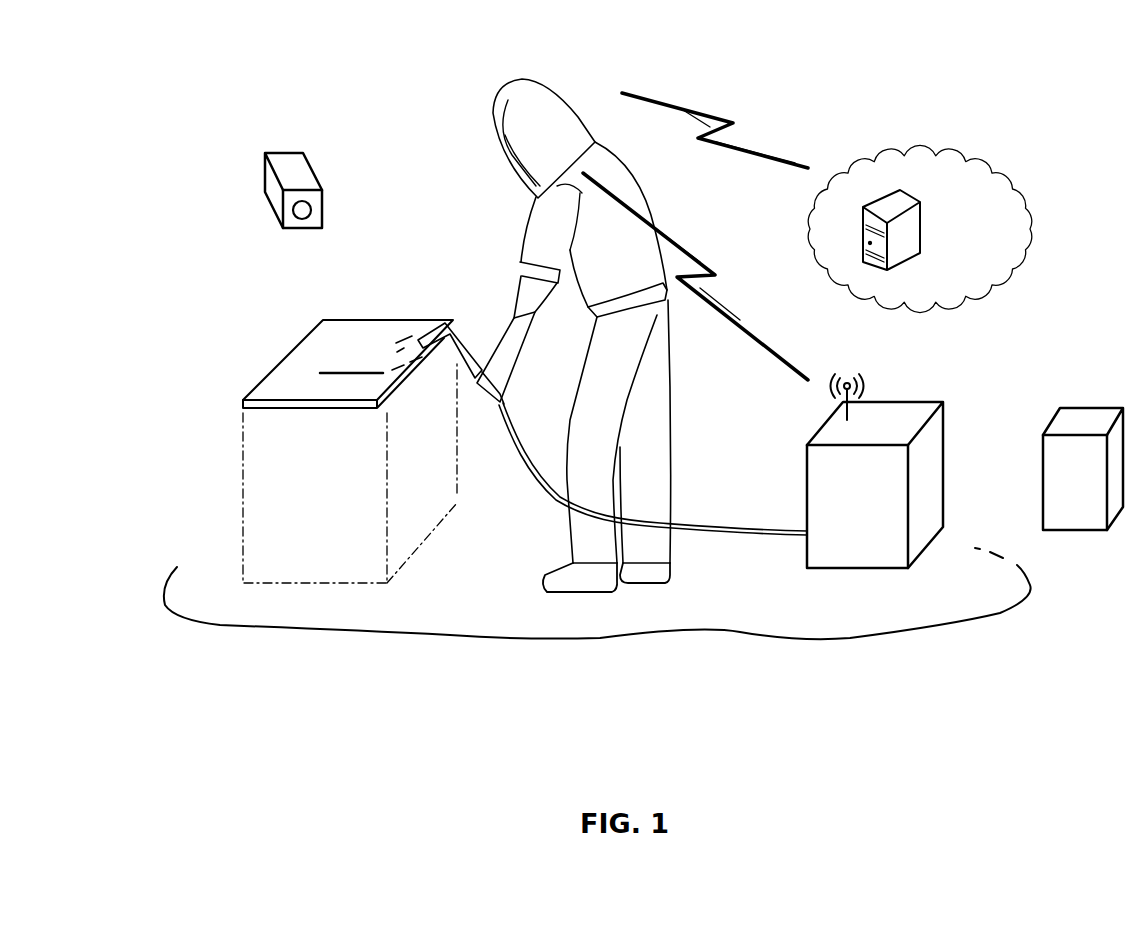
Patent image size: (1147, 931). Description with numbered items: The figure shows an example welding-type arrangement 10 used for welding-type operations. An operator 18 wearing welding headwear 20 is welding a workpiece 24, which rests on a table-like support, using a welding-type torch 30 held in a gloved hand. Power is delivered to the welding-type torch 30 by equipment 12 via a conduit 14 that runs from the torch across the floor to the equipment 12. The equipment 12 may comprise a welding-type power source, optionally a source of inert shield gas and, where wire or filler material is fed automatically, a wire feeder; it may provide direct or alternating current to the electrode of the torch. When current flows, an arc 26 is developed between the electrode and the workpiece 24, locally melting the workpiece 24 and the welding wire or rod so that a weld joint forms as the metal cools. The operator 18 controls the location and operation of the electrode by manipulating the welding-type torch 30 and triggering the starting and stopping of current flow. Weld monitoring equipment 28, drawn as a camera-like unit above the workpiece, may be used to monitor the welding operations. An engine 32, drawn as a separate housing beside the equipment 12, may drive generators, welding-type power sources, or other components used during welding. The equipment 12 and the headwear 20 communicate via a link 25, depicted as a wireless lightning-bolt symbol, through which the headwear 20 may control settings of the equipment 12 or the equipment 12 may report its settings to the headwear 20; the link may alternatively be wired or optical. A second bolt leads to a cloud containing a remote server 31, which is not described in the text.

The welding-type arrangement 10 is at (827, 98).
The equipment 12 is at (887, 410).
The conduit 14 is at (705, 513).
The operator 18 is at (643, 189).
The welding headwear 20 is at (553, 84).
The workpiece 24 is at (313, 342).
The link 25 is at (708, 267).
The arc 26 is at (385, 363).
The weld monitoring equipment 28 is at (287, 152).
The welding-type torch 30 is at (475, 350).
The remote server 31 is at (921, 215).
The engine 32 is at (1083, 530).